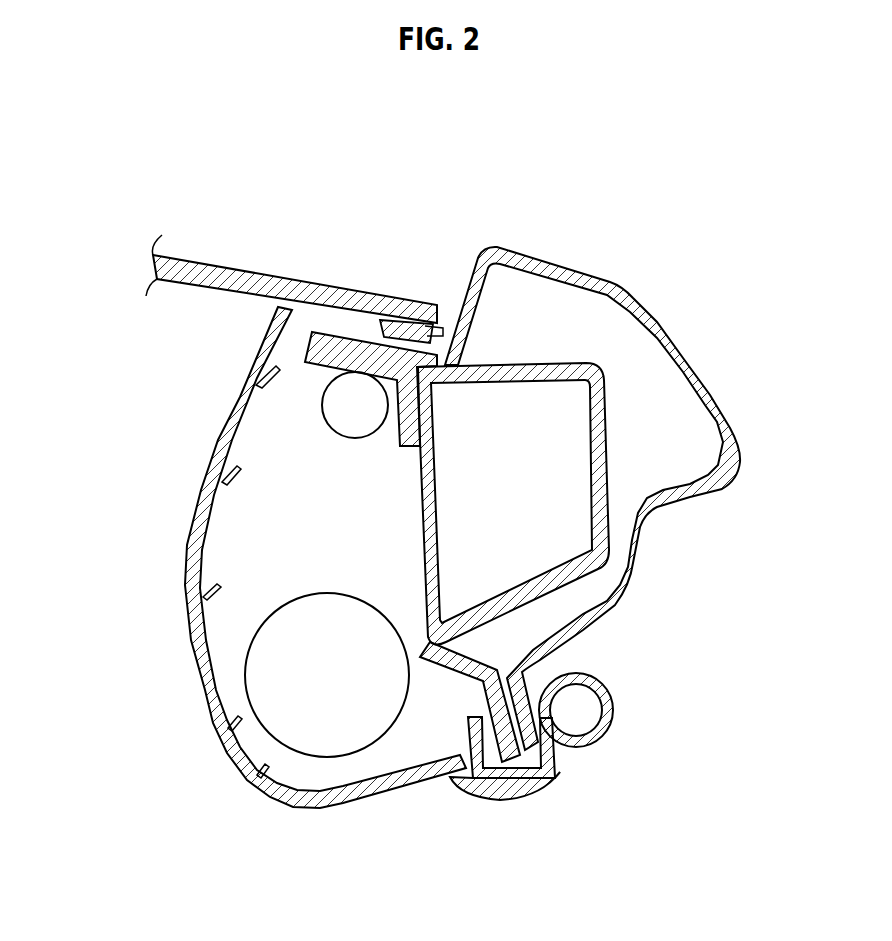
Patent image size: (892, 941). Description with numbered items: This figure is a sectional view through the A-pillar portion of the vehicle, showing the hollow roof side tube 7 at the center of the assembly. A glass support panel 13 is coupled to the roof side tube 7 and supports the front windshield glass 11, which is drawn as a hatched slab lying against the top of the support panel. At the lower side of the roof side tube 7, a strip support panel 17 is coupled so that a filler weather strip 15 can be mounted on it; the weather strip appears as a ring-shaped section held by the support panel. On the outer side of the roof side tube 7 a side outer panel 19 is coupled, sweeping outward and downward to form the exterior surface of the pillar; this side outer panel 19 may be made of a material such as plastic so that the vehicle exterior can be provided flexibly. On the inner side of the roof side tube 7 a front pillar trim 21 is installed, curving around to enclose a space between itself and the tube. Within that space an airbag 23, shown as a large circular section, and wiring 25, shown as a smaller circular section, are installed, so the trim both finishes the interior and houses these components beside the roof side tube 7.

The roof side tube 7 is at (598, 425).
The front windshield glass 11 is at (246, 270).
The glass support panel 13 is at (275, 345).
The filler weather strip 15 is at (615, 722).
The strip support panel 17 is at (447, 660).
The side outer panel 19 is at (637, 300).
The front pillar trim 21 is at (193, 620).
The airbag 23 is at (245, 681).
The wiring 25 is at (333, 415).